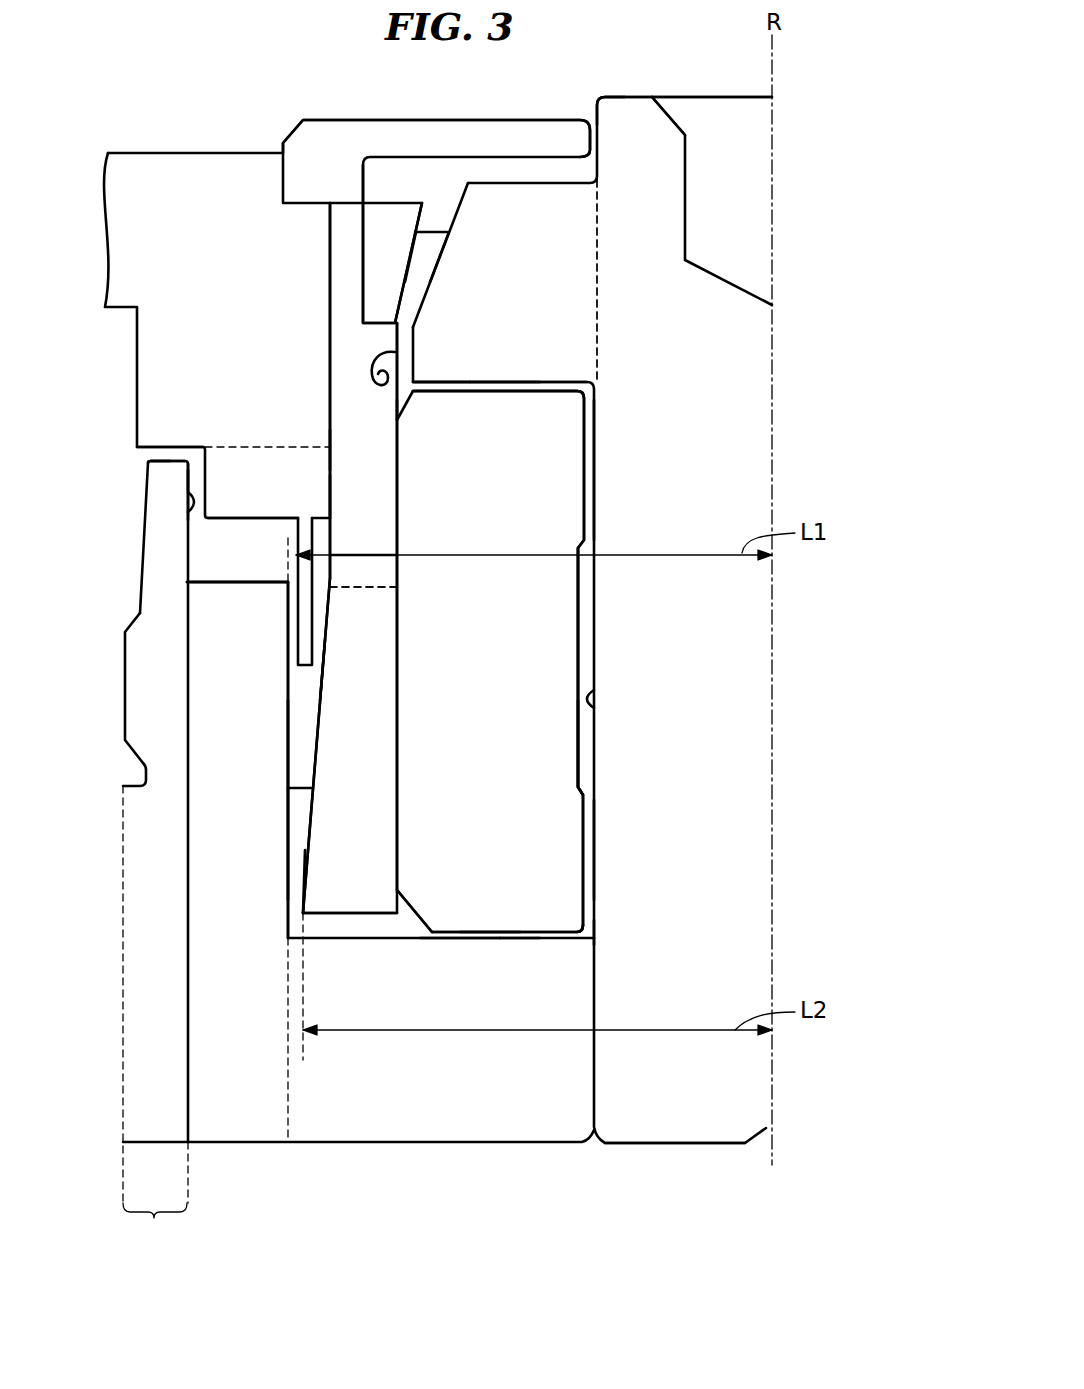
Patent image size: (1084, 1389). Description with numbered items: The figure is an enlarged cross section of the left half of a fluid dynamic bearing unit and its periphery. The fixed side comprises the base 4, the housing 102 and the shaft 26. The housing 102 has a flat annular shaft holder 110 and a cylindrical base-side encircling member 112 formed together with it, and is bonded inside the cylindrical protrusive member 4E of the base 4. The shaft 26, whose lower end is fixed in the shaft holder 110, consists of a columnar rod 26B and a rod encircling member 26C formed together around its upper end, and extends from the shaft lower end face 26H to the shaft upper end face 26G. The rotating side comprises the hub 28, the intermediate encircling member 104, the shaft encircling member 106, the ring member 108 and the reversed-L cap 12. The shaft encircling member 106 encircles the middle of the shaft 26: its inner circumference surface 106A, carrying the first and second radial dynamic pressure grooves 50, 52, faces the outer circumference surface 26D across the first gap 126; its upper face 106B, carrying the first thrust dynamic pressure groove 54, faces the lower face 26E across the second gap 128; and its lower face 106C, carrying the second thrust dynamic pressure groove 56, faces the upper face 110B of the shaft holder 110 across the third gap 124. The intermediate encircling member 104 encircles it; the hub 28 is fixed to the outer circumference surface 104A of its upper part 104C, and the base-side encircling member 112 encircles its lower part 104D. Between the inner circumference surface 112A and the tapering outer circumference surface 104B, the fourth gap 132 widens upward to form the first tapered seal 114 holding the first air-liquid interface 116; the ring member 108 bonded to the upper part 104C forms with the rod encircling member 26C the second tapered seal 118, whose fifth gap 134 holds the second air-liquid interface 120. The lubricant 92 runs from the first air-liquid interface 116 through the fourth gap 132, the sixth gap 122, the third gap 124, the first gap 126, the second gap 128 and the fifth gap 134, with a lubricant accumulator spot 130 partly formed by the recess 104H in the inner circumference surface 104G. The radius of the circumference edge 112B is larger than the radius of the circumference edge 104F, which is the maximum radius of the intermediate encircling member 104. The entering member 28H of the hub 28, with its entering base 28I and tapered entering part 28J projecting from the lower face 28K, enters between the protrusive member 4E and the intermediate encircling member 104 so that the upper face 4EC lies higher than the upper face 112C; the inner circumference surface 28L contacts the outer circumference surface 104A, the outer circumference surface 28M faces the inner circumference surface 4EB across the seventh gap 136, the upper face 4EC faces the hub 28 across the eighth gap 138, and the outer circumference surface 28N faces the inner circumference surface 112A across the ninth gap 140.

The base 4 is at (125, 680).
The protrusive member 4E is at (155, 854).
The inner circumference surface 4EB is at (187, 508).
The upper face 4EC is at (175, 461).
The cap 12 is at (322, 138).
The shaft 26 is at (722, 1125).
The rod 26B is at (630, 120).
The rod encircling member 26C is at (580, 228).
The outer circumference surface 26D is at (594, 705).
The lower face 26E is at (490, 385).
The shaft upper end face 26G is at (610, 97).
The shaft lower end face 26H is at (660, 1145).
The hub 28 is at (128, 165).
The entering member 28H is at (225, 458).
The entering base 28I is at (330, 455).
The tapered entering part 28J is at (320, 655).
The lower face 28K is at (247, 518).
The inner circumference surface 28L is at (330, 495).
The outer circumference surface 28M is at (192, 480).
The outer circumference surface 28N is at (292, 600).
The first radial dynamic pressure groove 50 is at (585, 478).
The second radial dynamic pressure groove 52 is at (583, 845).
The first thrust dynamic pressure groove 54 is at (504, 383).
The second thrust dynamic pressure groove 56 is at (512, 937).
The lubricant 92 is at (588, 935).
The housing 102 is at (552, 1125).
The intermediate encircling member 104 is at (330, 252).
The outer circumference surface 104A is at (330, 288).
The outer circumference surface 104B is at (318, 690).
The upper part 104C is at (388, 576).
The lower part 104D is at (388, 610).
The circumference edge 104F is at (305, 915).
The inner circumference surface 104G is at (398, 470).
The recess 104H is at (390, 395).
The shaft encircling member 106 is at (535, 643).
The inner circumference surface 106A is at (580, 603).
The upper face 106B is at (545, 390).
The lower face 106C is at (547, 932).
The ring member 108 is at (393, 217).
The shaft holder 110 is at (332, 1120).
The upper face 110B is at (458, 922).
The base-side encircling member 112 is at (252, 1120).
The inner circumference surface 112A is at (290, 740).
The circumference edge 112B is at (285, 580).
The upper face 112C is at (220, 580).
The first tapered seal 114 is at (300, 815).
The first air-liquid interface 116 is at (290, 785).
The second tapered seal 118 is at (430, 258).
The second air-liquid interface 120 is at (438, 223).
The sixth gap 122 is at (360, 928).
The third gap 124 is at (487, 935).
The first gap 126 is at (578, 755).
The second gap 128 is at (455, 383).
The lubricant accumulator spot 130 is at (370, 353).
The fourth gap 132 is at (300, 850).
The fifth gap 134 is at (417, 285).
The seventh gap 136 is at (195, 482).
The eighth gap 138 is at (162, 458).
The ninth gap 140 is at (294, 643).